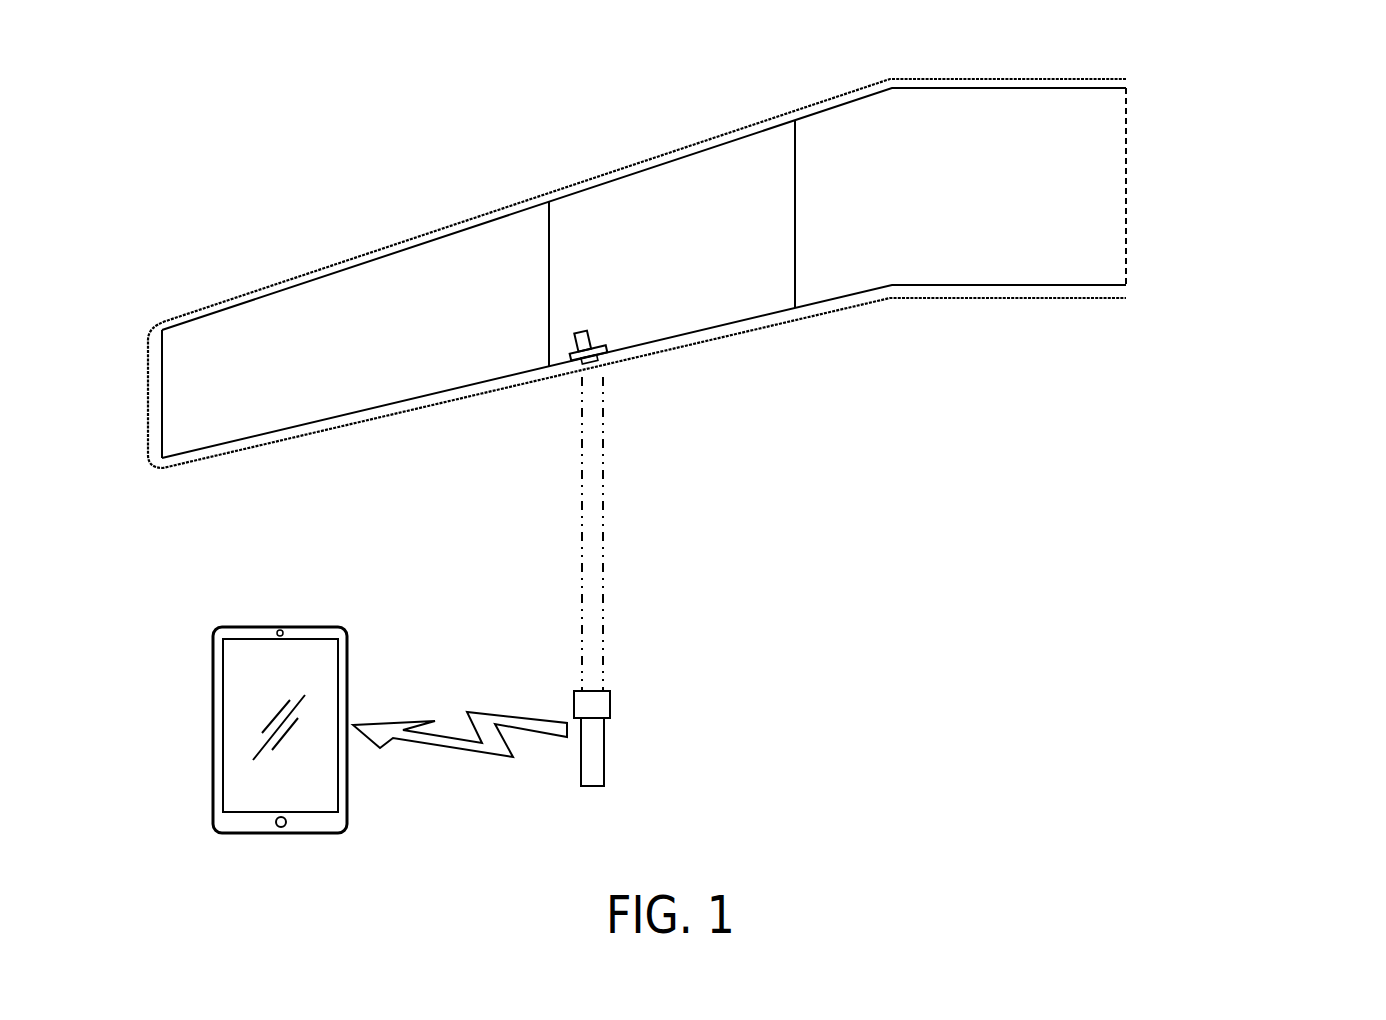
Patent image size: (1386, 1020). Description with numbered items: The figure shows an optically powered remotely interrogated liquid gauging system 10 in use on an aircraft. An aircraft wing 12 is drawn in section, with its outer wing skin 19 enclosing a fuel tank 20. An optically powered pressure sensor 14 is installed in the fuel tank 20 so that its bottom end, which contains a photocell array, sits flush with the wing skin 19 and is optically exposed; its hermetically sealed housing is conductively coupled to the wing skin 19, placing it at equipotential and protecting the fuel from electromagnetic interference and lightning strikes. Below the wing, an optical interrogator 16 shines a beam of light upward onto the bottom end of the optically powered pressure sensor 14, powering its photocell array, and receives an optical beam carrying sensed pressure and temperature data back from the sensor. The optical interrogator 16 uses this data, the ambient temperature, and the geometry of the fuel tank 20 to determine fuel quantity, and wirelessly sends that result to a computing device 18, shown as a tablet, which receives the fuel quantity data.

The optically powered remotely interrogated liquid gauging system 10 is at (1279, 84).
The aircraft wing 12 is at (273, 211).
The optically powered pressure sensor 14 is at (597, 365).
The optical interrogator 16 is at (608, 692).
The computing device 18 is at (303, 625).
The wing skin 19 is at (1032, 78).
The fuel tank 20 is at (670, 265).